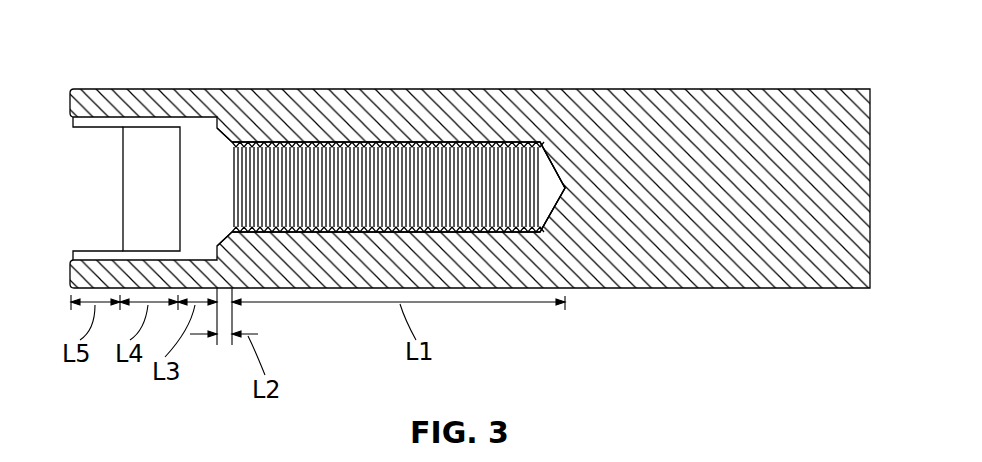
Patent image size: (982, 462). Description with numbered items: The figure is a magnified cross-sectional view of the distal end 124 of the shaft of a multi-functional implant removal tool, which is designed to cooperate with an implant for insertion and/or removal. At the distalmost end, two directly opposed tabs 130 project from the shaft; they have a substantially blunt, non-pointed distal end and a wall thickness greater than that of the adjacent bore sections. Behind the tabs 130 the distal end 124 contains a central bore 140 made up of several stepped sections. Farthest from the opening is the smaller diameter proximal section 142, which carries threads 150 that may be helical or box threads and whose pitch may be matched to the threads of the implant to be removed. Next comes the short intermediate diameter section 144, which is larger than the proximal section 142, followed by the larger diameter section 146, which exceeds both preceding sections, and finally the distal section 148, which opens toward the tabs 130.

The distal end 124 is at (773, 292).
The tabs 130 is at (88, 97).
The central bore 140 is at (335, 140).
The smaller diameter proximal section 142 is at (517, 145).
The intermediate diameter section 144 is at (237, 142).
The larger diameter section 146 is at (193, 132).
The distal section 148 is at (155, 145).
The threads 150 is at (438, 134).